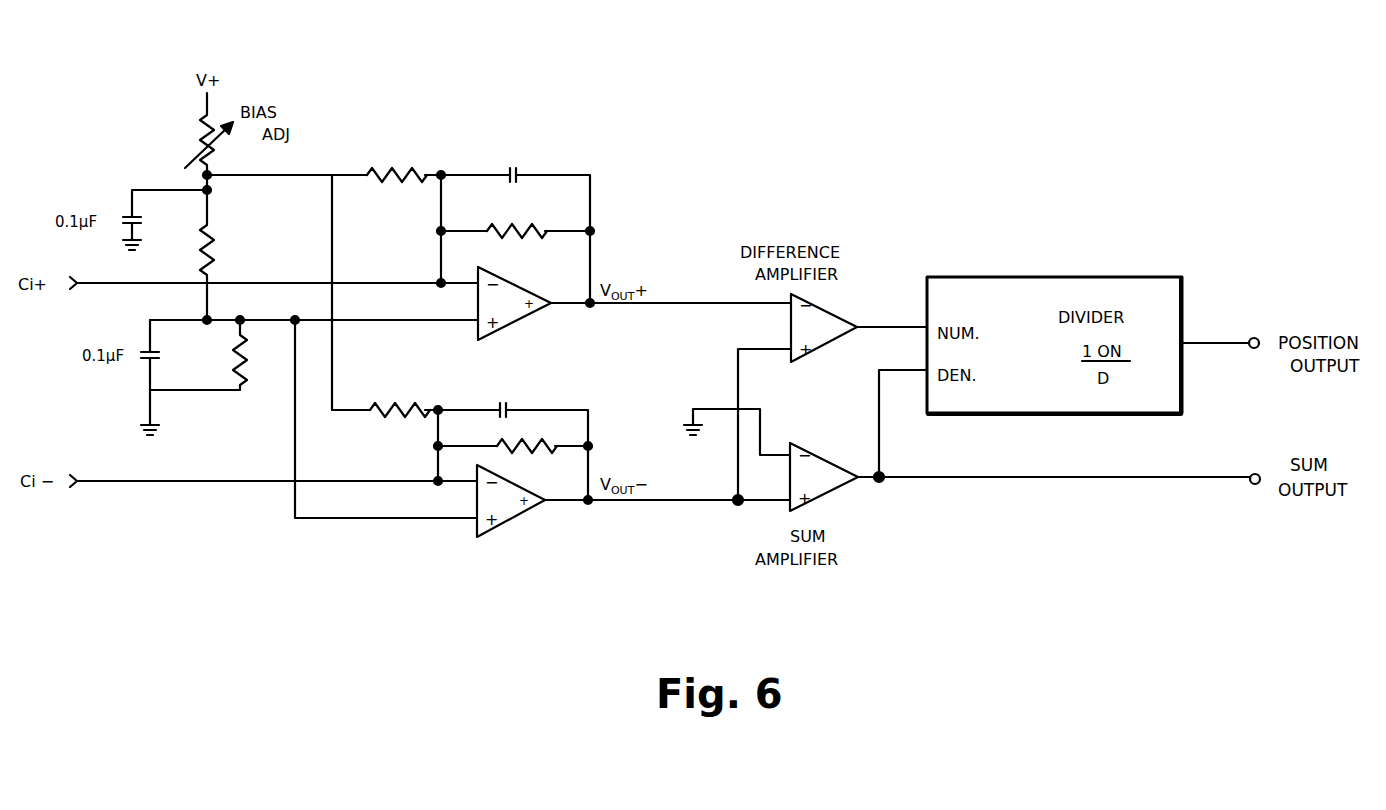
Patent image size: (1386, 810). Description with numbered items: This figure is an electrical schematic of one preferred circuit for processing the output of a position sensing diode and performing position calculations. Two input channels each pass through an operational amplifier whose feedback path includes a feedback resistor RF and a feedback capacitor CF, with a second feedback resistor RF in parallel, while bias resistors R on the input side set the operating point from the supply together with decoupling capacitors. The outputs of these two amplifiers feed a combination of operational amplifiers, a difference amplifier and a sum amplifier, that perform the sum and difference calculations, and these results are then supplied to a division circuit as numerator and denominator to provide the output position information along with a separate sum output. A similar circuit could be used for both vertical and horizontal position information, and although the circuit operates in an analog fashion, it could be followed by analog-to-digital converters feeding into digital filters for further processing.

The bias resistor R is at (231, 290).
The feedback resistor RF is at (462, 302).
The feedback capacitor CF is at (502, 283).